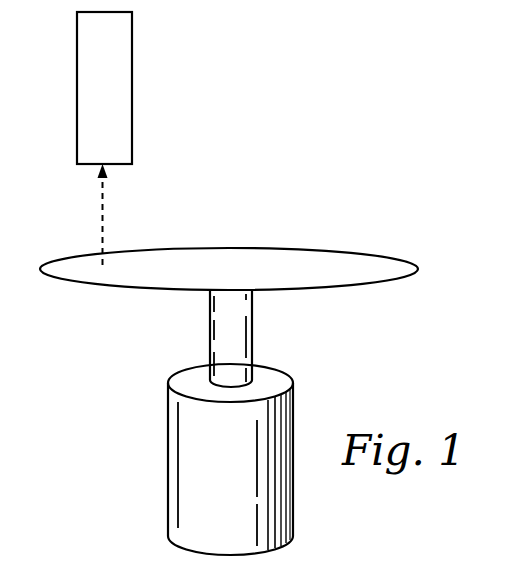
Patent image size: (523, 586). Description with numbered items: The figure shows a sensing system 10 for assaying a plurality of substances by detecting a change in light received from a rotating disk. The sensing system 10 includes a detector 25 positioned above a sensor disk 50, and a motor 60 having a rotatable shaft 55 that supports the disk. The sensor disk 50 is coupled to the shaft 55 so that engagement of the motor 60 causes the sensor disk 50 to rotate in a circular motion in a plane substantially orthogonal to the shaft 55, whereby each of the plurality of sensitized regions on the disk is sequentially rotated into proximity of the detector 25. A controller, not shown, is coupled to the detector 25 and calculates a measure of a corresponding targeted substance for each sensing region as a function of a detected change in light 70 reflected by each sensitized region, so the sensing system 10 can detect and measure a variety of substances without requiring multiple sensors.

The sensing system 10 is at (344, 213).
The detector 25 is at (92, 86).
The sensor disk 50 is at (220, 282).
The rotatable shaft 55 is at (209, 327).
The motor 60 is at (169, 455).
The reflected light 70 is at (100, 201).